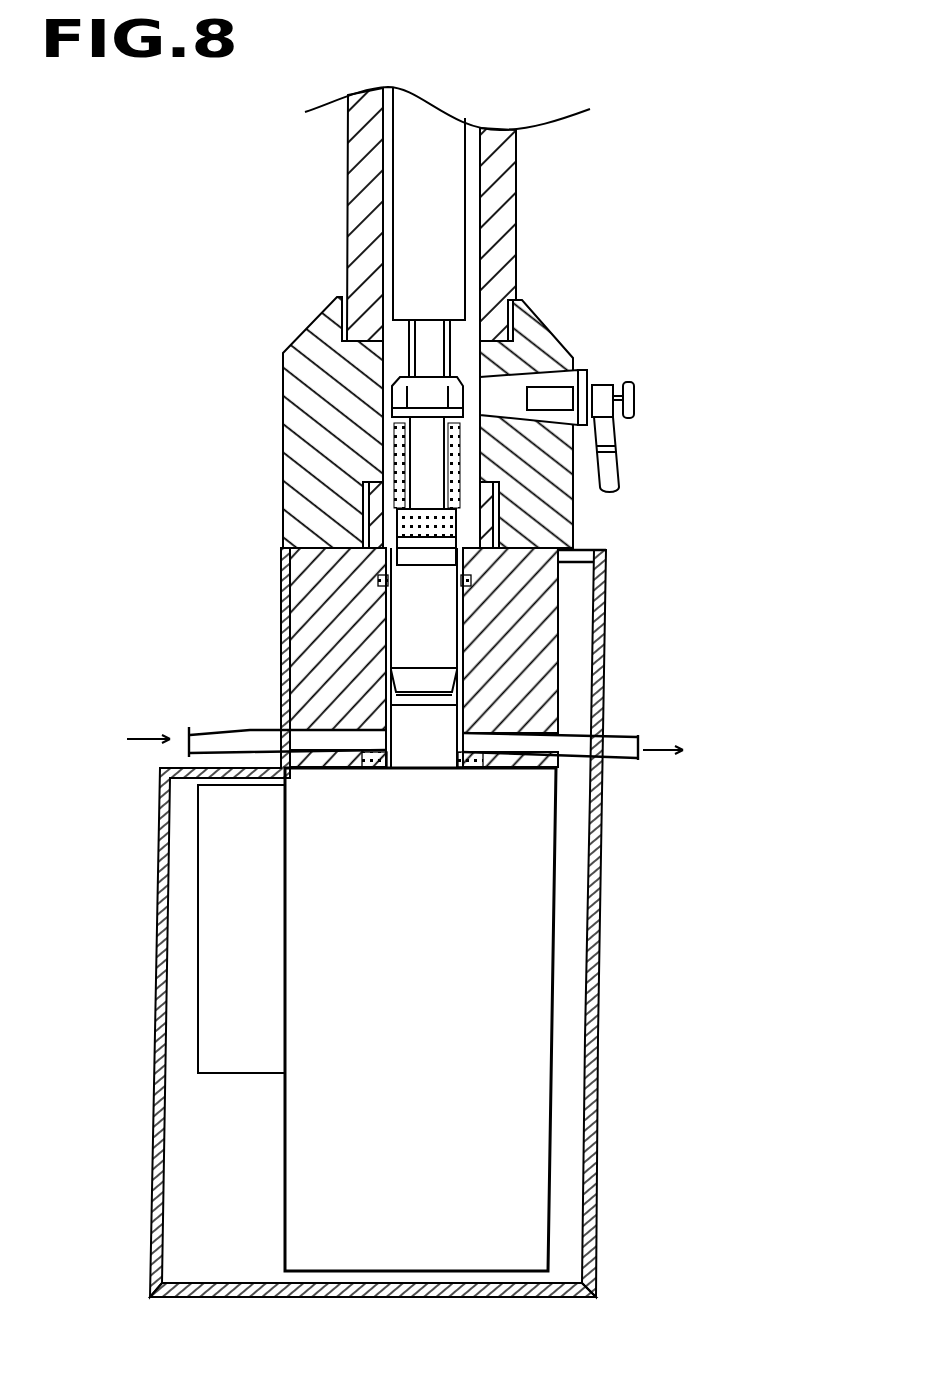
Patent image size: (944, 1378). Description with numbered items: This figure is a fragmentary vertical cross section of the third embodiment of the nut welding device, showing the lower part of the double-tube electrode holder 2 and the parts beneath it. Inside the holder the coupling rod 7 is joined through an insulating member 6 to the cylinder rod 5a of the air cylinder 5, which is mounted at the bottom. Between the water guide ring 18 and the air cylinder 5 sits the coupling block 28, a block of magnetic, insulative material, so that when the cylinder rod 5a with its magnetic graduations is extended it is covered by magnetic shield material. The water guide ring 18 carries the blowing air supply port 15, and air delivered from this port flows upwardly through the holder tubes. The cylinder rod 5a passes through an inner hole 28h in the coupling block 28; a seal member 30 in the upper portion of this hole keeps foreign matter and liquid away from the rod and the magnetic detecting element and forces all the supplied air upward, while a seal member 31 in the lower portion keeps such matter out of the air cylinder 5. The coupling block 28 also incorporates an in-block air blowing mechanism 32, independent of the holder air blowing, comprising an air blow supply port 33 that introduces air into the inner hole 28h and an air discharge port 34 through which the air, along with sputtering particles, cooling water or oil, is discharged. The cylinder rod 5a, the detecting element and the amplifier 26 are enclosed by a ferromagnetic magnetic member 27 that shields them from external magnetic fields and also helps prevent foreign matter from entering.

The double-tube electrode holder 2 is at (507, 240).
The coupling rod 7 is at (450, 192).
The insulating member 6 is at (397, 425).
The water guide ring 18 is at (332, 322).
The blowing air supply port 15 is at (605, 392).
The coupling block 28 is at (287, 565).
The inner hole 28h is at (391, 617).
The seal member 30 is at (474, 578).
The cylinder rod 5a is at (440, 616).
The seal member 31 is at (376, 767).
The in-block air blowing mechanism 32 is at (328, 726).
The air blow supply port 33 is at (280, 731).
The air discharge port 34 is at (557, 732).
The magnetic member 27 is at (604, 816).
The amplifier 26 is at (218, 960).
The air cylinder 5 is at (535, 1010).